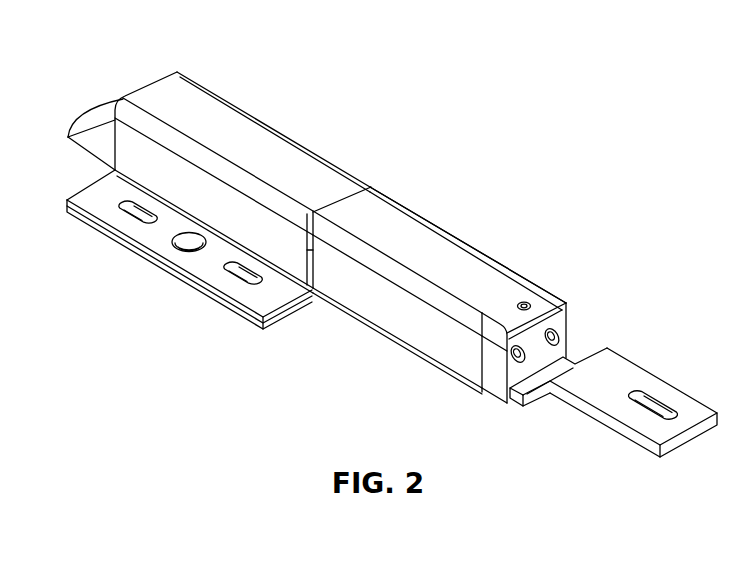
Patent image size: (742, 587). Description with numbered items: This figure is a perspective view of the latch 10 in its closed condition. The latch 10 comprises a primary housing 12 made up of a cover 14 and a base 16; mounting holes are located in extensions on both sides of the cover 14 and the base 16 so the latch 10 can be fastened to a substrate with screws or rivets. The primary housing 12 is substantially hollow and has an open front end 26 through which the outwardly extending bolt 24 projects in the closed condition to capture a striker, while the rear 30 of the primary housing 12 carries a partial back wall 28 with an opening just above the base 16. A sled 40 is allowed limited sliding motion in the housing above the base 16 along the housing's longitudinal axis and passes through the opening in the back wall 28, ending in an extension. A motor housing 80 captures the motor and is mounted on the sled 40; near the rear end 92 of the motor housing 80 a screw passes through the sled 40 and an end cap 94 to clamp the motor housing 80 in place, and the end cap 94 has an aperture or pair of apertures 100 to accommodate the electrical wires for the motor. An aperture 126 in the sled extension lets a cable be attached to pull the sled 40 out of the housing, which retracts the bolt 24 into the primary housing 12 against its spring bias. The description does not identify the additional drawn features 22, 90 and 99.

The latch 10 is at (433, 137).
The primary housing 12 is at (287, 135).
The cover 14 is at (215, 93).
The base 16 is at (258, 321).
The mounting slots 22 is at (224, 283).
The bolt 24 is at (108, 112).
The open front end 26 is at (123, 96).
The partial back wall 28 is at (317, 260).
The rear 30 is at (353, 197).
The sled 40 is at (523, 408).
The motor housing 80 is at (477, 245).
The aperture 90 is at (526, 301).
The rear end 92 is at (568, 305).
The end cap 94 is at (485, 398).
The mounting plate 99 is at (643, 368).
The apertures 100 is at (565, 343).
The aperture 126 is at (670, 406).